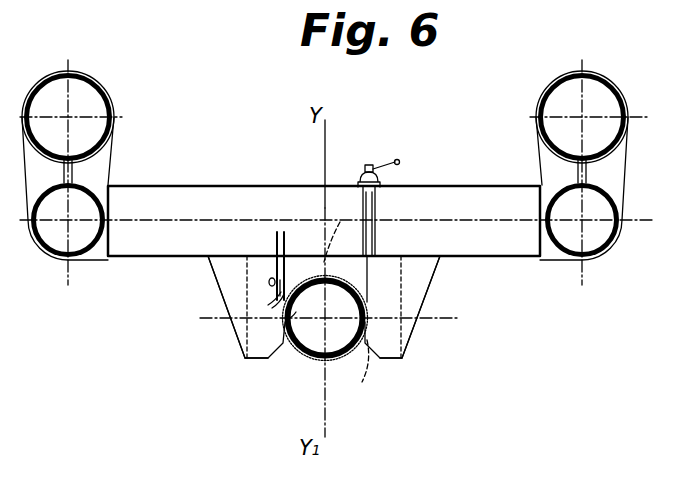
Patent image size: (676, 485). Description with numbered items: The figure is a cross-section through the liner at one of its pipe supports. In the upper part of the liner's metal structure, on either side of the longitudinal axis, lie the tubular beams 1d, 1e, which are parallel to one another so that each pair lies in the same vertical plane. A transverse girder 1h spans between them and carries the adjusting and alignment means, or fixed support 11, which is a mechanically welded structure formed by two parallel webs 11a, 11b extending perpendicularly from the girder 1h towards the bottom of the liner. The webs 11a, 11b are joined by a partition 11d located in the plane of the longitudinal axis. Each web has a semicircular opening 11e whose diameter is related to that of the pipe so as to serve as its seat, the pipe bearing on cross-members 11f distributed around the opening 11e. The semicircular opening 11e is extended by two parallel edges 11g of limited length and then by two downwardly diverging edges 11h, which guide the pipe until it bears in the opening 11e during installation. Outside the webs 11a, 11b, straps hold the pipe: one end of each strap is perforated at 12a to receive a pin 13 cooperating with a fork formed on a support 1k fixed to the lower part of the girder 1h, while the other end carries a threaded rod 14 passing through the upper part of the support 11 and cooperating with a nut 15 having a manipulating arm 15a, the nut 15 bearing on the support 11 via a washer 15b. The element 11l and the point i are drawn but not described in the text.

The tubular beam 1d is at (92, 108).
The tubular beam 1e is at (85, 238).
The transverse girder 1h is at (240, 196).
The support 1k is at (276, 252).
The fixed support 11 is at (350, 303).
The web 11a is at (263, 337).
The web 11b is at (386, 340).
The partition 11d is at (342, 233).
The semicircular opening 11e is at (325, 318).
The cross-member 11f is at (296, 292).
The parallel edge 11g is at (279, 322).
The diverging edge 11h is at (279, 350).
The support arm 11l is at (357, 288).
The perforation 12a is at (273, 302).
The pin 13 is at (268, 283).
The threaded rod 14 is at (372, 198).
The nut 15 is at (372, 168).
The manipulating arm 15a is at (400, 163).
The washer 15b is at (361, 180).
The contact point i is at (287, 317).